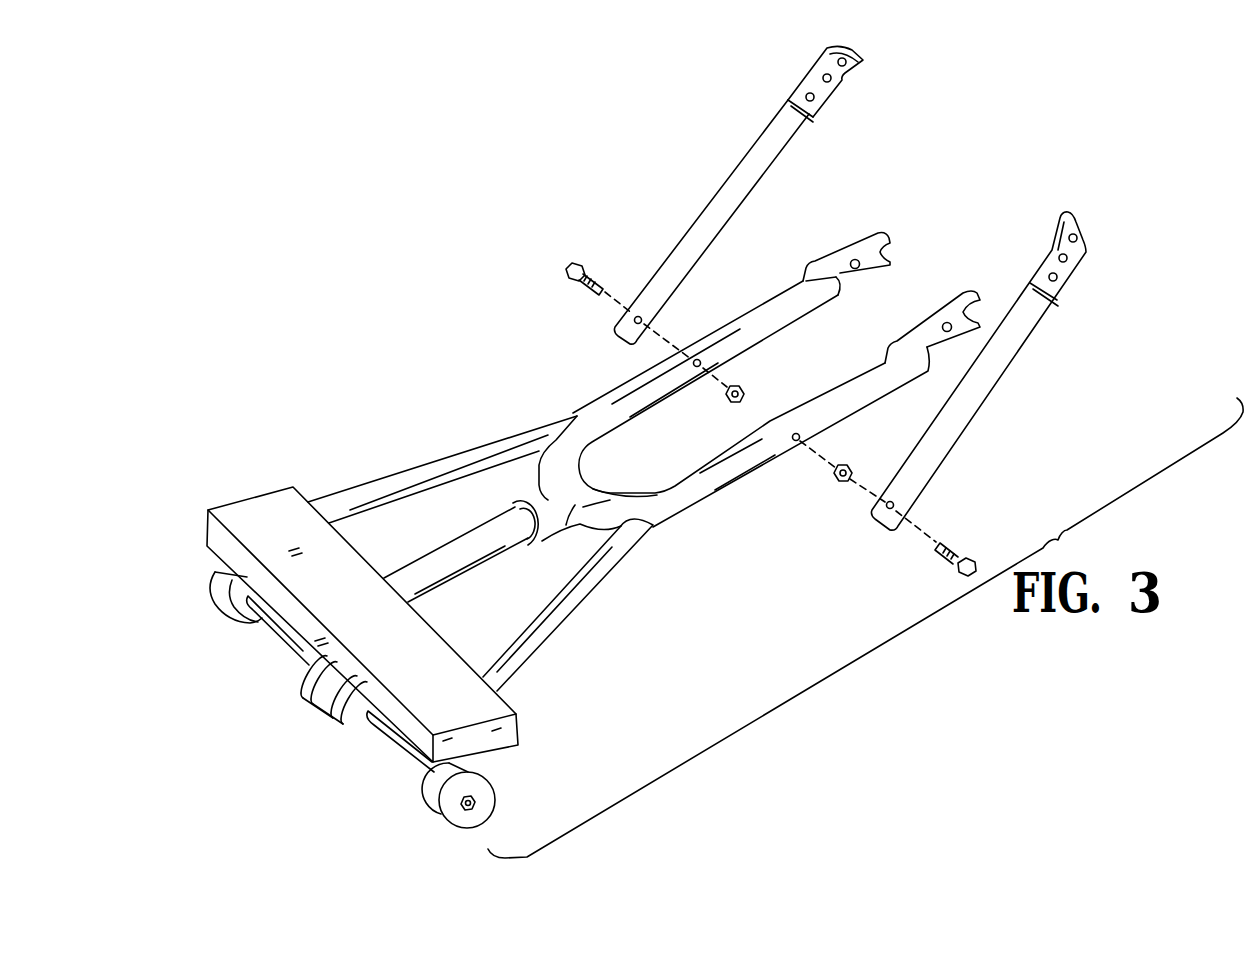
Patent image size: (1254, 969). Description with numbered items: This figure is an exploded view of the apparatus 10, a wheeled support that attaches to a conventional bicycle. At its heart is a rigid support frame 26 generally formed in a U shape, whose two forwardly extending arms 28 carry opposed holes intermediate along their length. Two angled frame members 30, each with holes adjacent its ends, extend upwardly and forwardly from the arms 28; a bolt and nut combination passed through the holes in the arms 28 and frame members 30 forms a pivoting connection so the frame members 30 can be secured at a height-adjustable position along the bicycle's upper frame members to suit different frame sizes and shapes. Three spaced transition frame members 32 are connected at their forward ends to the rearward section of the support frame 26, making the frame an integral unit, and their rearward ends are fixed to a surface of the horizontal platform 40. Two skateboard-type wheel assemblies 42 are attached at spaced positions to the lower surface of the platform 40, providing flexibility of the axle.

The apparatus 10 is at (623, 194).
The rigid support frame 26 is at (568, 463).
The forwardly extending arms 28 is at (773, 318).
The angled frame members 30 is at (743, 163).
The transition frame members 32 is at (428, 475).
The horizontal platform 40 is at (277, 520).
The wheel assemblies 42 is at (222, 605).